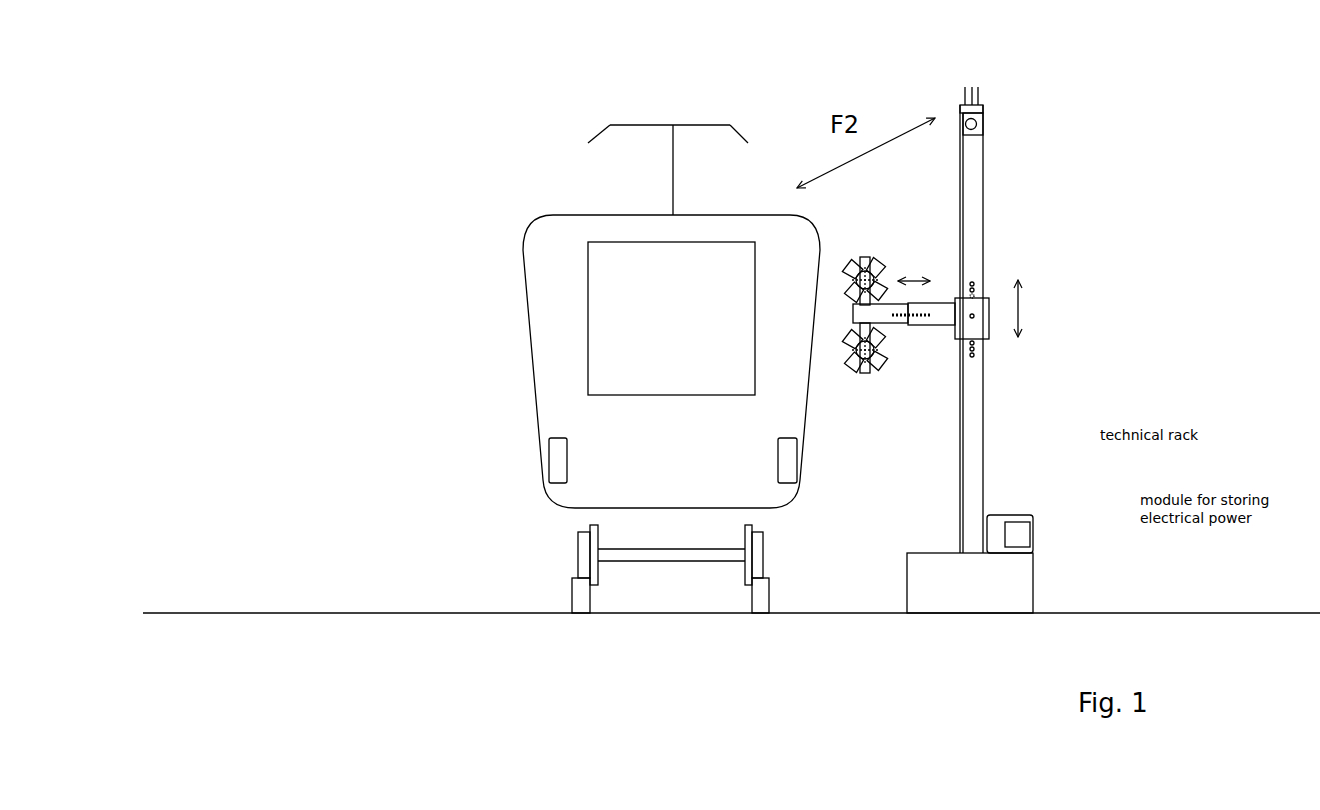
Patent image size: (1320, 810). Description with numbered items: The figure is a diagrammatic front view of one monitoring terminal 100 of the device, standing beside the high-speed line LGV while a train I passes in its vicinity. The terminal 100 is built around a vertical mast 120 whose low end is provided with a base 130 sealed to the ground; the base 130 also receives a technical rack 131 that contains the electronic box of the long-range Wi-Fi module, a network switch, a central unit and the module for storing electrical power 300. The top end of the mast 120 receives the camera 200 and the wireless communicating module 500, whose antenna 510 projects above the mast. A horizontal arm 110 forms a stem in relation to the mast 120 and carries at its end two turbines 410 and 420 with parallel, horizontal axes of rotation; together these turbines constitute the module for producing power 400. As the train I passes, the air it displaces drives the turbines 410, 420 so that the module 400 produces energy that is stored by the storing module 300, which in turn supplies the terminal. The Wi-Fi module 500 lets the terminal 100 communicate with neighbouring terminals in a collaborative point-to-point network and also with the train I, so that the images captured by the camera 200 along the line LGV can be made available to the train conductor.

The train (rail vehicle) I is at (548, 238).
The high-speed line LGV is at (580, 595).
The monitoring terminal 100 is at (1003, 317).
The horizontal arm 110 is at (908, 322).
The mast 120 is at (973, 415).
The base 130 is at (1017, 583).
The technical rack 131 is at (1002, 513).
The camera 200 is at (974, 125).
The module for storing electrical power 300 is at (1023, 537).
The module for producing power 400 is at (895, 293).
The turbine 410 is at (872, 257).
The turbine 420 is at (870, 363).
The wireless communicating module 500 is at (1028, 63).
The antenna 510 is at (983, 106).